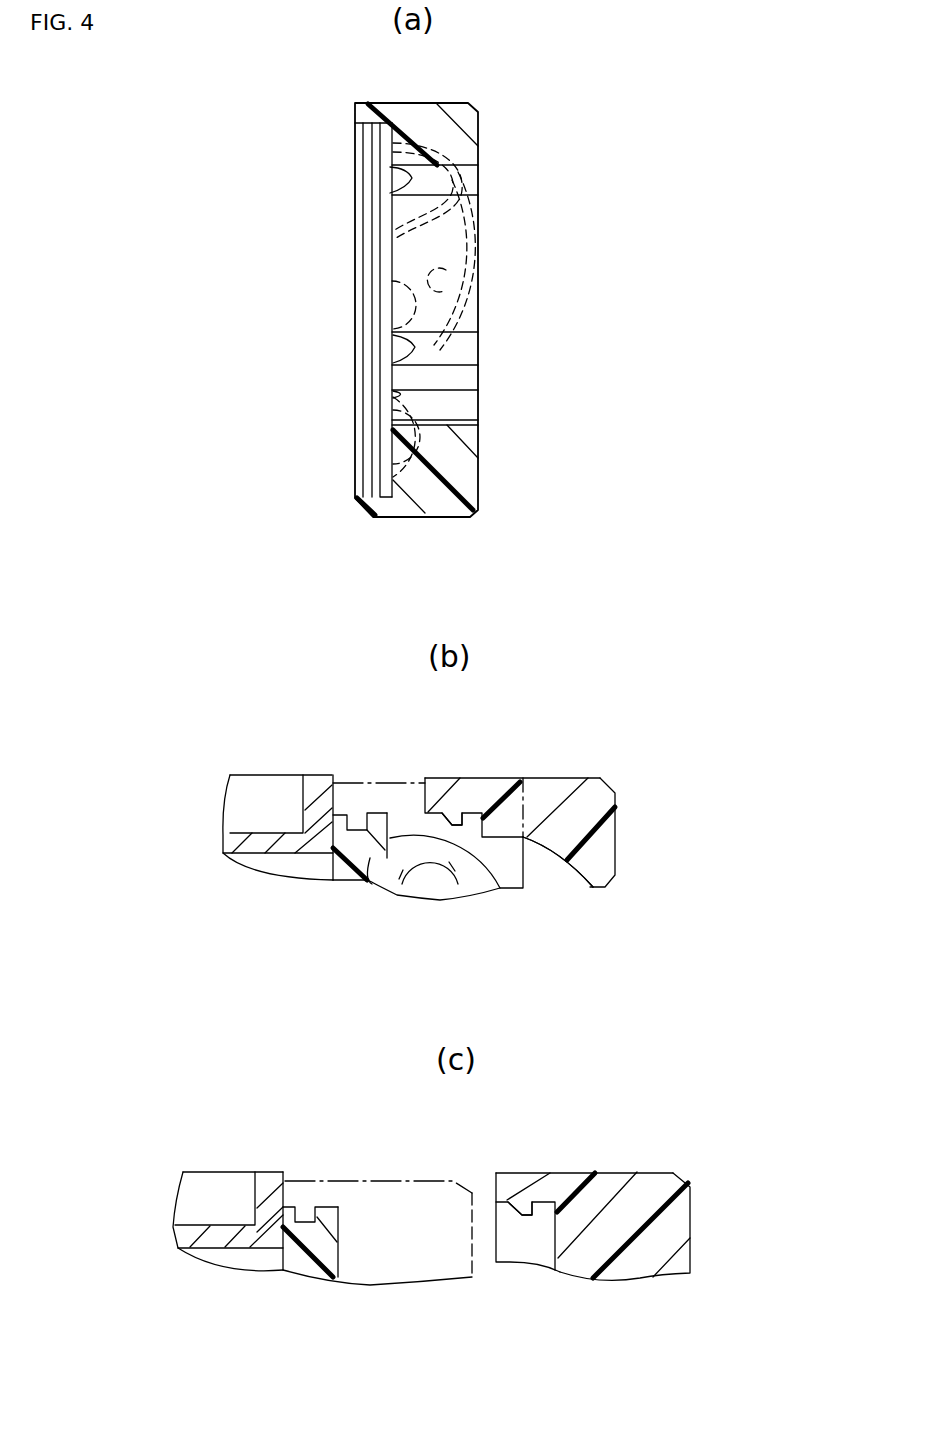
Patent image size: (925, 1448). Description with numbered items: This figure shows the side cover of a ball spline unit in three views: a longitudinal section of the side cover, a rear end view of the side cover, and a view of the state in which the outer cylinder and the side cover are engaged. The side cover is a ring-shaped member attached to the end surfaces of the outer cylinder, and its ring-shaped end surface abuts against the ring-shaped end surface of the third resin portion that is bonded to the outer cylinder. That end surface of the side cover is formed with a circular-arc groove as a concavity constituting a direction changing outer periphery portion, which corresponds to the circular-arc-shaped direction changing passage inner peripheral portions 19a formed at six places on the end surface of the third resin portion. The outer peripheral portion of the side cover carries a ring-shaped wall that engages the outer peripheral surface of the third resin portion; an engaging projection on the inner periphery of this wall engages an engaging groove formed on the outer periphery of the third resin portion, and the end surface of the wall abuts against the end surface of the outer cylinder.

The direction changing passage inner peripheral portion 19a is at (377, 885).